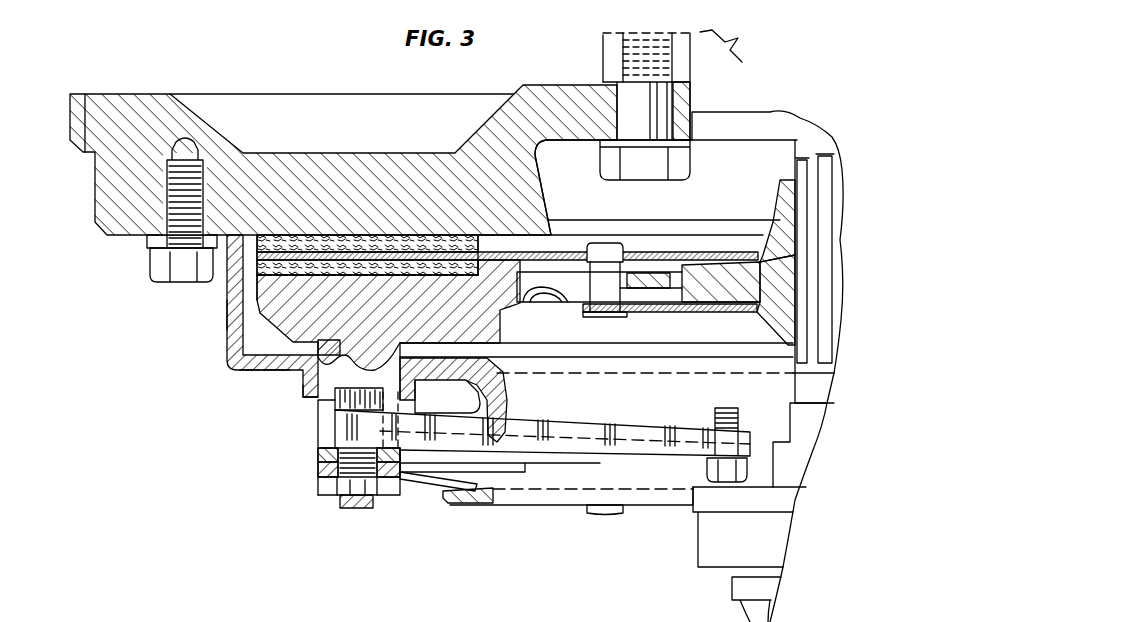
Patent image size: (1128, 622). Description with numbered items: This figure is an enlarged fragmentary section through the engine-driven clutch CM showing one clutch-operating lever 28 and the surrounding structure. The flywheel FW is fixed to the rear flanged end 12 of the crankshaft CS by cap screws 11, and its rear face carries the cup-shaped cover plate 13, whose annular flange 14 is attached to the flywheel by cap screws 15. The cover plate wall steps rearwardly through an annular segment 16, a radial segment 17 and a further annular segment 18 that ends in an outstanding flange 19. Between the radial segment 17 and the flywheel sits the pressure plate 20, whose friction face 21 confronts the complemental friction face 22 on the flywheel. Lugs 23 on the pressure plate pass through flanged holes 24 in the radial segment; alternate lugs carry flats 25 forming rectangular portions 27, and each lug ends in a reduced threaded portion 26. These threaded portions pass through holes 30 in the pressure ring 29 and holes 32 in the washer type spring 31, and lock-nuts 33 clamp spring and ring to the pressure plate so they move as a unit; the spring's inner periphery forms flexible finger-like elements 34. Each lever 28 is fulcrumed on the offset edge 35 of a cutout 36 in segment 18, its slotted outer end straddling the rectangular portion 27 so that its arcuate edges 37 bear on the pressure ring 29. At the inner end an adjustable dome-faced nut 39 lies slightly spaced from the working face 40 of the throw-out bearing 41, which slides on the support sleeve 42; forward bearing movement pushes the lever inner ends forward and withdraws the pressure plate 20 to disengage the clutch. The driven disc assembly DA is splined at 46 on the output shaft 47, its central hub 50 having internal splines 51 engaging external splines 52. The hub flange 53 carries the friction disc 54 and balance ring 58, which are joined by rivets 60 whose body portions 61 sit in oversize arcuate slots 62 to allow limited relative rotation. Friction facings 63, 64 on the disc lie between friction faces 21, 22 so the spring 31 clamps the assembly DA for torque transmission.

The flywheel FW is at (100, 235).
The crankshaft CS is at (750, 38).
The clutch driven disc assembly DA is at (503, 247).
The clutch CM is at (236, 448).
The cap screws 11 is at (693, 160).
The rear flanged end 12 is at (603, 48).
The cup-shaped backing (cover) plate 13 is at (222, 320).
The annular flange 14 is at (143, 248).
The cap screws 15 is at (172, 282).
The annular segment 16 is at (222, 338).
The radial segment 17 is at (238, 376).
The annular segment 18 is at (505, 373).
The annular outstanding flange 19 is at (470, 500).
The pressure plate 20 is at (268, 372).
The friction face 21 is at (300, 276).
The friction face 22 is at (305, 247).
The cylindrical extensions (lugs) 23 is at (306, 391).
The flanged holes 24 is at (376, 346).
The flats 25 is at (334, 405).
The reduced diameter threaded portion 26 is at (356, 508).
The rectangular portions 27 is at (318, 440).
The clutch-operating levers 28 is at (636, 422).
The pressure ring 29 is at (318, 462).
The holes 30 is at (335, 472).
The washer type spring 31 is at (418, 484).
The holes 32 is at (367, 478).
The lock-nuts 33 is at (350, 490).
The finger-like elements 34 is at (460, 487).
The forward slightly offset edge 35 is at (506, 418).
The cutout 36 is at (525, 466).
The arcuate edges 37 is at (338, 450).
The adjustable dome-faced nut 39 is at (726, 478).
The working face 40 is at (757, 486).
The clutch throw-out bearing 41 is at (695, 570).
The support sleeve 42 is at (800, 462).
The splined formation 46 is at (778, 205).
The clutch output (driven) shaft 47 is at (800, 150).
The central hub 50 is at (783, 172).
The internal splines 51 is at (787, 323).
The external splines 52 is at (812, 358).
The annular outstanding flange 53 is at (640, 272).
The friction disc 54 is at (716, 266).
The balance ring 58 is at (680, 312).
The rivets 60 is at (610, 314).
The intermediate normal body portion 61 is at (600, 298).
The oversize arcuate slots 62 is at (546, 272).
The annular friction facing 63 is at (403, 276).
The annular friction facing 64 is at (407, 252).